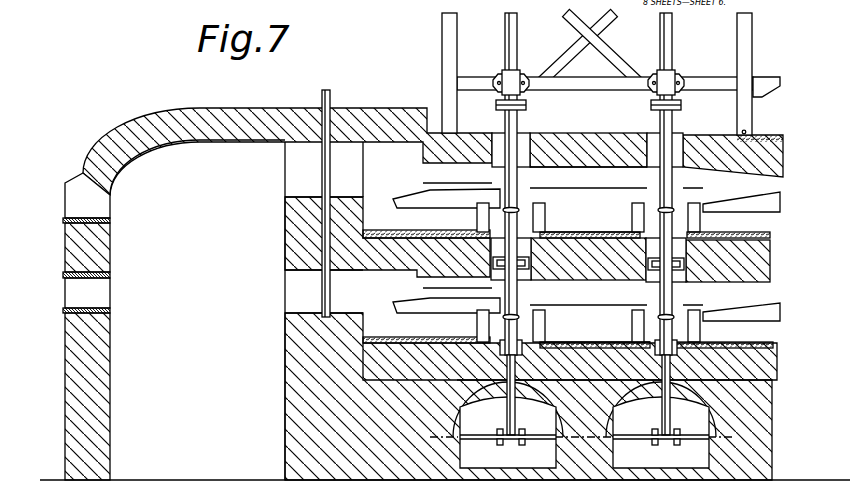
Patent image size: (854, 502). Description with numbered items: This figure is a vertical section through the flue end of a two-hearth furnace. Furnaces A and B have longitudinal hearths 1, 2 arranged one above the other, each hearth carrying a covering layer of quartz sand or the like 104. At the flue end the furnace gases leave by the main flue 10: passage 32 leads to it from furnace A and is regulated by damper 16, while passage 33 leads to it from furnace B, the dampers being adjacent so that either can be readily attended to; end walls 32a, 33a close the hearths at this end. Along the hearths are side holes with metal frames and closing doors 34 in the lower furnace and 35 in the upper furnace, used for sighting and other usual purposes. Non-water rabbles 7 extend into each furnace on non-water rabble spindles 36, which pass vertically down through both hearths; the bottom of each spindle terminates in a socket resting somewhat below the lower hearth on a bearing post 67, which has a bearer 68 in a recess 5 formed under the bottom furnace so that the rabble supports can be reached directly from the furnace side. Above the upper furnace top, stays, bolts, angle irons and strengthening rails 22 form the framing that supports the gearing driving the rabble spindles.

The lower hearth 1 is at (741, 322).
The upper hearth 2 is at (741, 213).
The recess 5 is at (584, 426).
The non-water rabble 7 is at (519, 179).
The main flue 10 is at (197, 236).
The damper 16 is at (323, 289).
The stays, bolts, angle irons and strengthening rails 22 is at (441, 53).
The passage 32 is at (324, 291).
The end wall 32a is at (366, 320).
The passage 33 is at (324, 169).
The end wall 33a is at (366, 210).
The closing door 34 is at (543, 320).
The closing door 35 is at (543, 206).
The non-water rabble spindle 36 is at (523, 48).
The bearing post 67 is at (517, 411).
The bearer 68 is at (584, 450).
The layer of quartz sand 104 is at (774, 237).
The furnace A is at (595, 326).
The furnace B is at (590, 217).